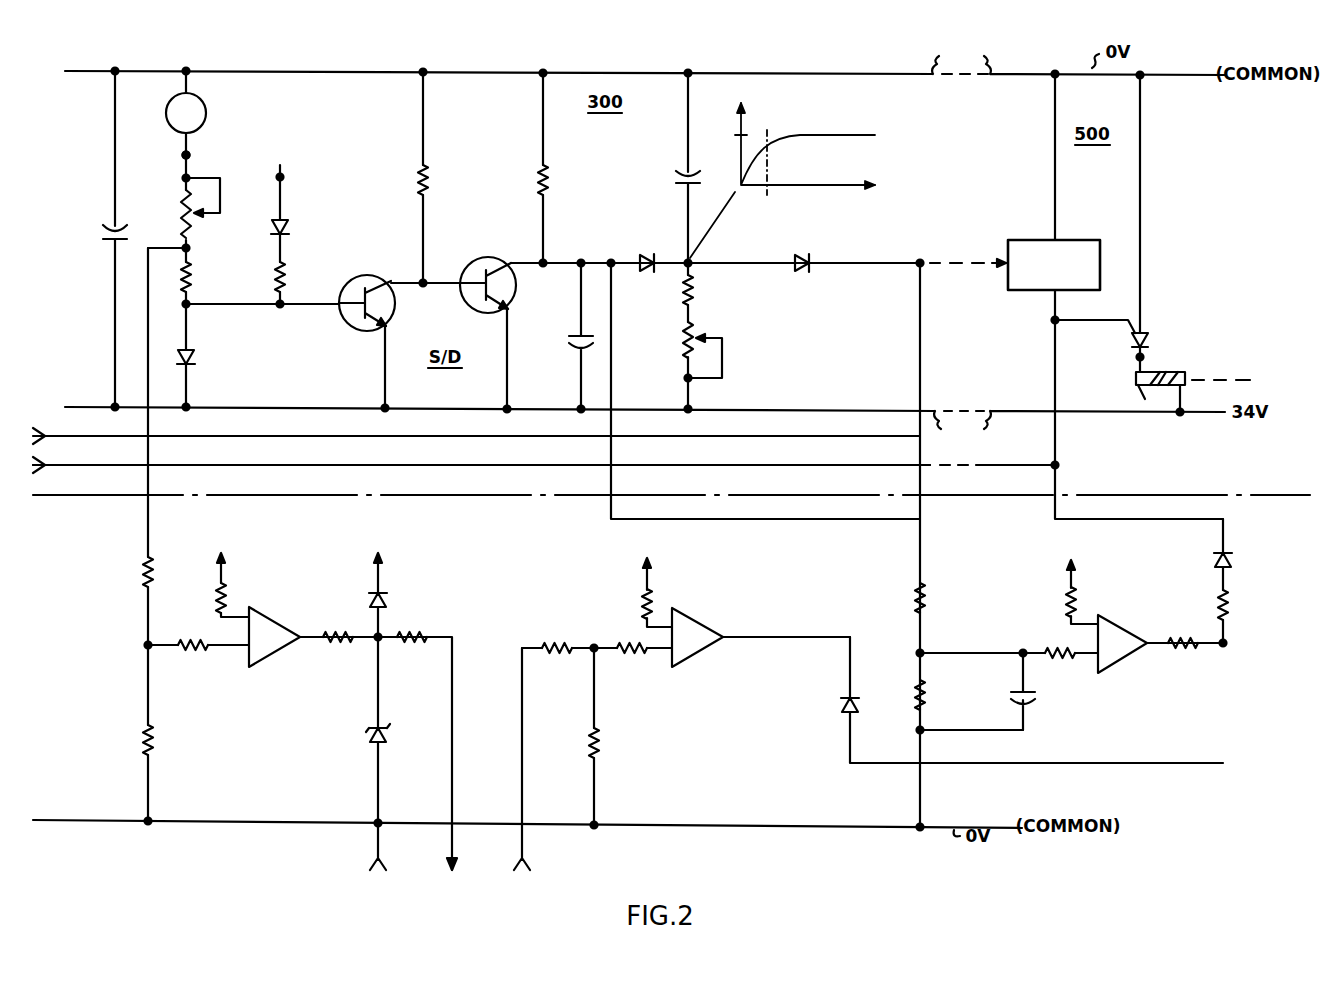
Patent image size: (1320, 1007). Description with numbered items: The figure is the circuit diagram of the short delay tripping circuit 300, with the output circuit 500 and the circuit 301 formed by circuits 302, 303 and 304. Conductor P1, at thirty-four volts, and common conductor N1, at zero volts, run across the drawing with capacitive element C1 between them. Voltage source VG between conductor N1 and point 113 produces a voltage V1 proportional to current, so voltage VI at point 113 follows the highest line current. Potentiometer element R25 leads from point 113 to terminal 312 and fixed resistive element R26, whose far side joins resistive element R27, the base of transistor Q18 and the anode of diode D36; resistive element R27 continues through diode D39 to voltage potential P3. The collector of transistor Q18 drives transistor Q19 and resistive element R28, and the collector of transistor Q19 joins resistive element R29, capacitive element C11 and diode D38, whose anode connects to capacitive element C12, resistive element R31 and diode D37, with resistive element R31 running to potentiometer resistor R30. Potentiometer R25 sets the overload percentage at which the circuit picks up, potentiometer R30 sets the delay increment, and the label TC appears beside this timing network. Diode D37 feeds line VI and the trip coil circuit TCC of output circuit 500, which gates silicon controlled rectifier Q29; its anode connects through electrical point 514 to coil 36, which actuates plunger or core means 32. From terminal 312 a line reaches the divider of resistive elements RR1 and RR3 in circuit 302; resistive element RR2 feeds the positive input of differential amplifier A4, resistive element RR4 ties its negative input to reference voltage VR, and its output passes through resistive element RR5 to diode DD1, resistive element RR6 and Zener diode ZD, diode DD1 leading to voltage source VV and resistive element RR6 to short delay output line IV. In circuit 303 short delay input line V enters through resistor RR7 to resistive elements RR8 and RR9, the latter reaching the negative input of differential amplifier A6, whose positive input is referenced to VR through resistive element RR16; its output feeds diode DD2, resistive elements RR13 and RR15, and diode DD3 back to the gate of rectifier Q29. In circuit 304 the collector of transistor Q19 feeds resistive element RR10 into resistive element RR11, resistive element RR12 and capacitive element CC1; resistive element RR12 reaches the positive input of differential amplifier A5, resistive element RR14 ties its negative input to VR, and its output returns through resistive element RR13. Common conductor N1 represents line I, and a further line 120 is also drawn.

The neutral conductor N1 is at (895, 838).
The conductor P1 is at (645, 424).
The line 120 is at (569, 466).
The capacitive element C1 is at (111, 235).
The voltage source VG is at (206, 110).
The point 113 is at (178, 155).
The voltage V1 is at (190, 155).
The potentiometer element R25 is at (178, 200).
The terminal 312 is at (189, 248).
The fixed resistive element R26 is at (189, 276).
The diode D36 is at (196, 357).
The source of voltage potential P3 is at (277, 158).
The diode D39 is at (271, 232).
The resistive element R27 is at (286, 276).
The transistor Q18 is at (396, 303).
The transistor Q19 is at (517, 285).
The resistive element R28 is at (416, 175).
The resistive element R29 is at (548, 179).
The short delay tripping circuit 300 is at (605, 102).
The capacitive element C11 is at (568, 347).
The diode D38 is at (650, 240).
The diode D37 is at (797, 248).
The capacitive element C12 is at (674, 182).
The resistive element R31 is at (696, 289).
The potentiometer resistor R30 is at (682, 338).
The time constant graph TC is at (801, 170).
The line VI is at (888, 260).
The trip coil circuit TCC is at (1072, 238).
The output circuit 500 is at (1092, 134).
The silicon controlled rectifier Q29 is at (1148, 340).
The electrical point 514 is at (1136, 356).
The plunger or core means 32 is at (1182, 372).
The coil 36 is at (1149, 394).
The resistive element RR1 is at (140, 569).
The resistive element RR2 is at (195, 636).
The resistive element RR3 is at (140, 735).
The resistive element RR4 is at (215, 604).
The resistive element RR5 is at (342, 622).
The resistive element RR6 is at (472, 602).
The resistor RR7 is at (558, 638).
The resistive element RR8 is at (602, 740).
The resistive element RR9 is at (628, 638).
The resistive element RR10 is at (912, 594).
The resistive element RR11 is at (925, 692).
The resistive element RR12 is at (1056, 642).
The resistive element RR13 is at (1186, 650).
The resistive element RR14 is at (1064, 598).
The resistive element RR15 is at (1217, 604).
The resistive element RR16 is at (642, 605).
The differential amplifier A4 is at (286, 637).
The differential amplifier A5 is at (1133, 644).
The differential amplifier A6 is at (761, 637).
The circuit 302 is at (268, 593).
The circuit 301 is at (548, 548).
The circuit 303 is at (711, 610).
The circuit 304 is at (1126, 613).
The reference voltage VR is at (646, 562).
The voltage source VV is at (378, 563).
The diode DD1 is at (388, 600).
The diode DD2 is at (840, 705).
The diode DD3 is at (1210, 558).
The Zener diode ZD is at (364, 733).
The capacitive element CC1 is at (1038, 700).
The line I is at (378, 887).
The short delay output line IV is at (452, 887).
The short delay input line V is at (522, 772).